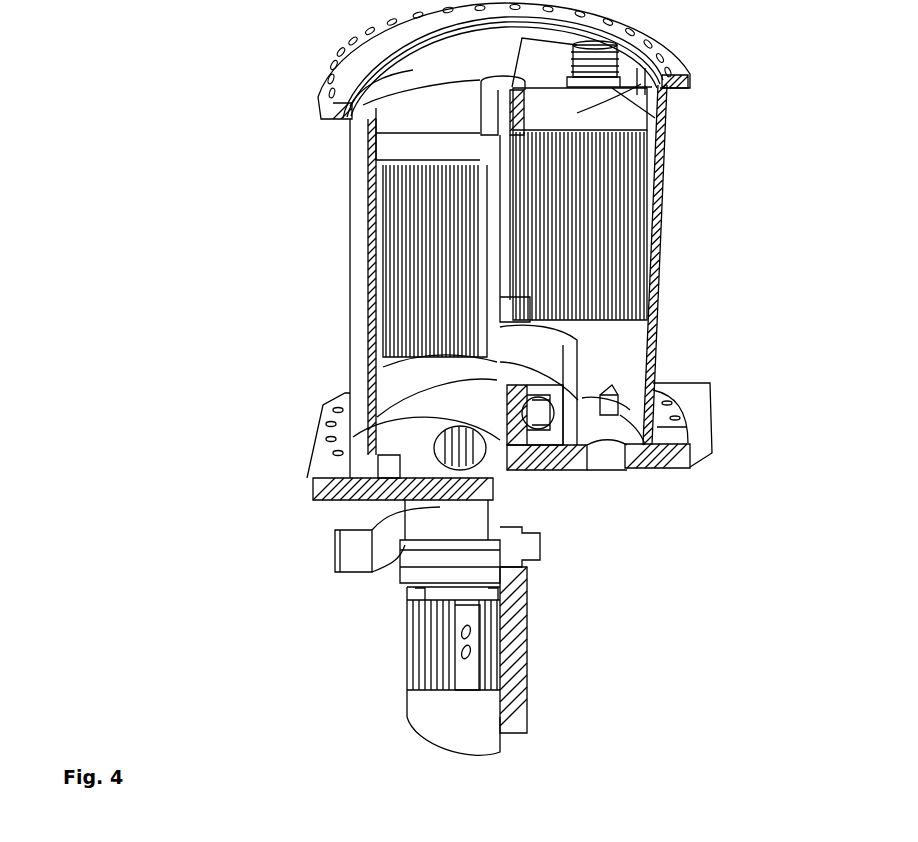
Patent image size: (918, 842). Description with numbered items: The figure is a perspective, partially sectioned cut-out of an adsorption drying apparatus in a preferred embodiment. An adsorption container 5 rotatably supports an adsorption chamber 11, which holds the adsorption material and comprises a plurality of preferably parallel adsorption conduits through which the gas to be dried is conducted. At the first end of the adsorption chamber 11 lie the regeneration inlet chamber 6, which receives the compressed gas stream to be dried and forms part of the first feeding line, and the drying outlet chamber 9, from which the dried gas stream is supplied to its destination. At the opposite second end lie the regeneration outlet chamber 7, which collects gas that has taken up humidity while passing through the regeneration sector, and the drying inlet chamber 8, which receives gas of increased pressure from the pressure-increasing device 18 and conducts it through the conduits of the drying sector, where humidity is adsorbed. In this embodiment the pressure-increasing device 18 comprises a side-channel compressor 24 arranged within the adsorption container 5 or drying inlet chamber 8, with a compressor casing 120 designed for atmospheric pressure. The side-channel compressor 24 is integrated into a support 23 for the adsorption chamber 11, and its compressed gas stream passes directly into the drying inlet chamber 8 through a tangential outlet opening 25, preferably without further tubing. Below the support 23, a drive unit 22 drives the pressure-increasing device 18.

The adsorption container 5 is at (660, 177).
The regeneration inlet chamber 6 is at (617, 115).
The regeneration outlet chamber 7 is at (628, 343).
The drying inlet chamber 8 is at (425, 375).
The drying outlet chamber 9 is at (357, 114).
The adsorption chamber 11 is at (605, 223).
The pressure-increasing device 18 is at (395, 418).
The drive unit 22 is at (437, 652).
The support 23 is at (313, 500).
The side-channel compressor 24 is at (400, 443).
The tangential outlet opening 25 is at (503, 470).
The compressor casing 120 is at (377, 500).